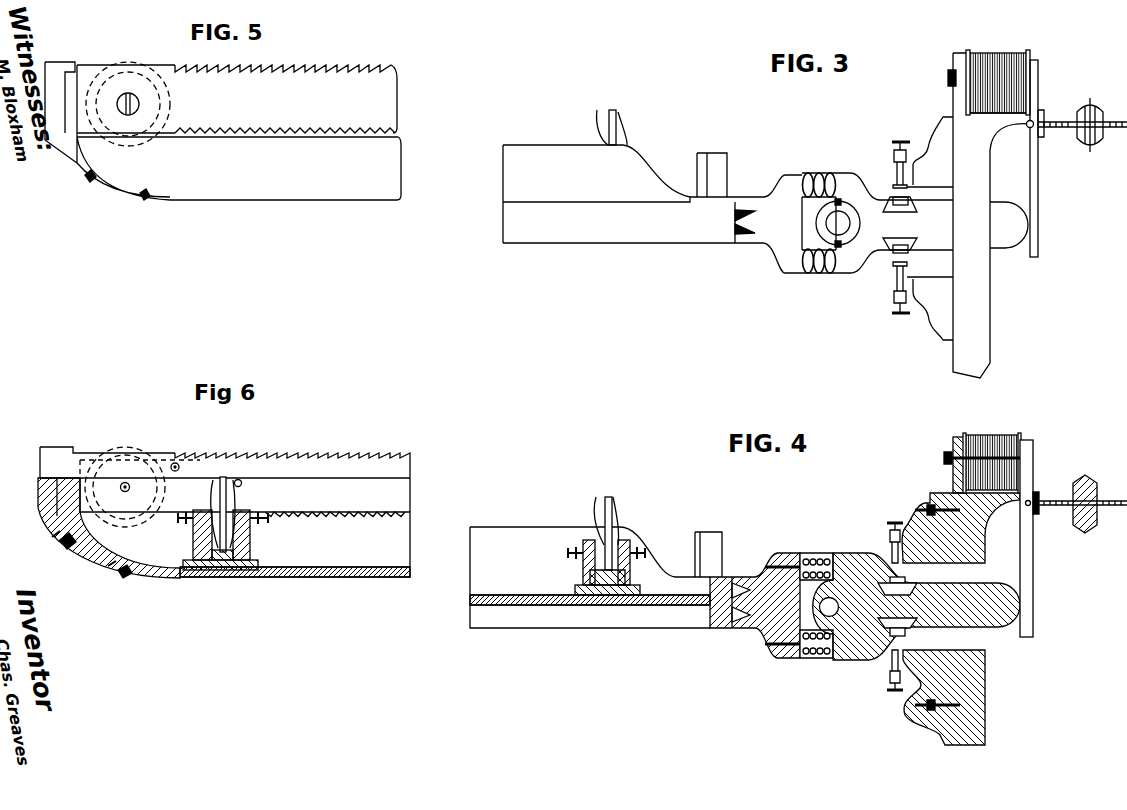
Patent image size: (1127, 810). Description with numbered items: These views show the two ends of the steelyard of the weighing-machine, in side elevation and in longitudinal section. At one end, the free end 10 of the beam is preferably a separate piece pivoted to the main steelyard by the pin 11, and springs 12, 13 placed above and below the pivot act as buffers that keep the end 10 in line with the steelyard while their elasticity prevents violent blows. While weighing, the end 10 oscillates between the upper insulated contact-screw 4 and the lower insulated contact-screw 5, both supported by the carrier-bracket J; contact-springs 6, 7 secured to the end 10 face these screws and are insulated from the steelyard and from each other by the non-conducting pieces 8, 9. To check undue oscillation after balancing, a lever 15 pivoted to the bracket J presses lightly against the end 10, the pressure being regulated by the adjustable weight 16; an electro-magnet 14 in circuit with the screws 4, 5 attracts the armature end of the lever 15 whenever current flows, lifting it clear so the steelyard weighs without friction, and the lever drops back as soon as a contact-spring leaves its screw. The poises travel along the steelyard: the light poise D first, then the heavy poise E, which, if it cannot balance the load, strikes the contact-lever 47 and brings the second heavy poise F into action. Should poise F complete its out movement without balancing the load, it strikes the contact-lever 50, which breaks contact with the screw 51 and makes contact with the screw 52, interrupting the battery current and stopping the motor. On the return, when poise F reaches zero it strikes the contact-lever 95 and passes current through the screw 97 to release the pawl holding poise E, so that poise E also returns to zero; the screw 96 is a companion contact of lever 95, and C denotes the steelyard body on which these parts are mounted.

In FIG. 3, the upper insulated contact-screw 4 is at (896, 152).
In FIG. 3, the lower insulated contact-screw 5 is at (914, 289).
In FIG. 3, the contact-spring 6 is at (909, 197).
In FIG. 3, the contact-spring 7 is at (911, 253).
In FIG. 3, the non-conducting piece 8 is at (911, 209).
In FIG. 4, the non-conducting piece 8 is at (912, 587).
In FIG. 3, the non-conducting piece 9 is at (917, 239).
In FIG. 4, the non-conducting piece 9 is at (910, 633).
In FIG. 3, the free end of the beam or steelyard 10 is at (1009, 225).
In FIG. 4, the free end of the beam or steelyard 10 is at (916, 606).
In FIG. 3, the pin 11 is at (838, 223).
In FIG. 4, the pin 11 is at (829, 607).
In FIG. 3, the spring 12 is at (819, 174).
In FIG. 4, the spring 12 is at (799, 558).
In FIG. 3, the spring 13 is at (819, 273).
In FIG. 4, the spring 13 is at (799, 653).
In FIG. 3, the electro-magnet 14 is at (998, 76).
In FIG. 4, the electro-magnet 14 is at (988, 442).
In FIG. 3, the lever 15 is at (1047, 158).
In FIG. 4, the lever 15 is at (1033, 478).
In FIG. 3, the adjustable weight 16 is at (1082, 129).
In FIG. 4, the adjustable weight 16 is at (1097, 494).
In FIG. 3, the contact-lever 47 is at (620, 120).
In FIG. 4, the contact-lever 50 is at (608, 497).
In FIG. 4, the screw 51 is at (564, 556).
In FIG. 4, the screw 52 is at (643, 553).
In FIG. 6, the contact-lever 95 is at (220, 514).
In FIG. 6, the screw 96 is at (268, 527).
In FIG. 6, the screw 97 is at (179, 527).
In FIG. 5, the bar C is at (223, 131).
In FIG. 6, the bar C is at (224, 528).
In FIG. 3, the bar C is at (728, 209).
In FIG. 4, the bar C is at (635, 592).
In FIG. 4, the light poise D is at (953, 619).
In FIG. 5, the heavy poise E is at (237, 104).
In FIG. 6, the second heavy poise F is at (225, 487).
In FIG. 3, the carrier-bracket J is at (971, 215).